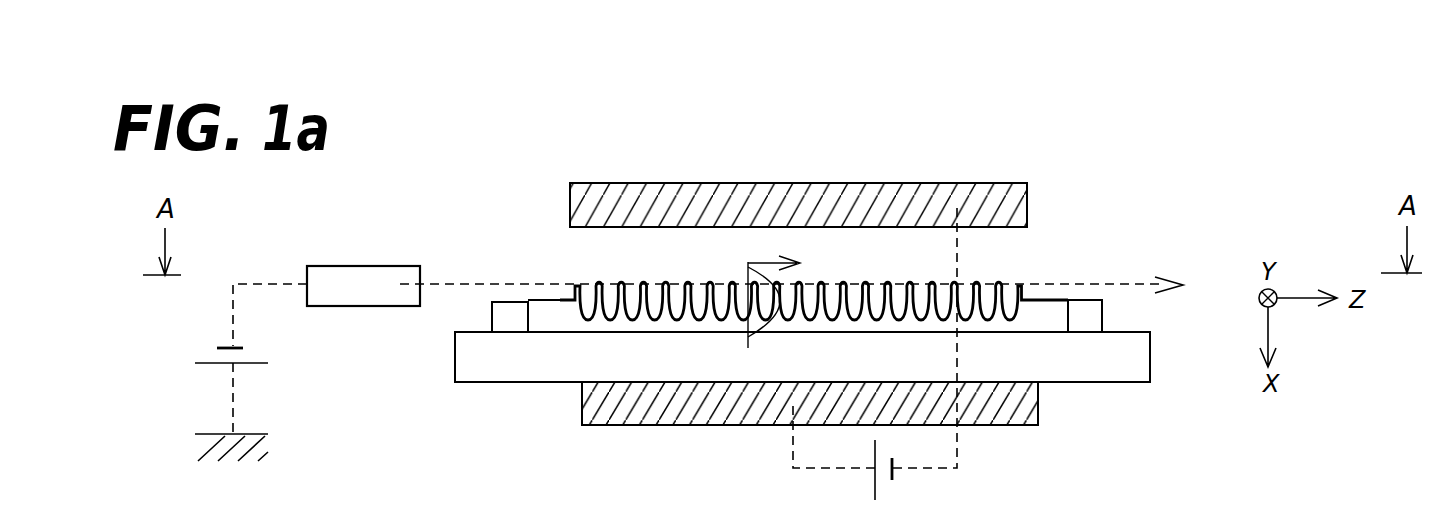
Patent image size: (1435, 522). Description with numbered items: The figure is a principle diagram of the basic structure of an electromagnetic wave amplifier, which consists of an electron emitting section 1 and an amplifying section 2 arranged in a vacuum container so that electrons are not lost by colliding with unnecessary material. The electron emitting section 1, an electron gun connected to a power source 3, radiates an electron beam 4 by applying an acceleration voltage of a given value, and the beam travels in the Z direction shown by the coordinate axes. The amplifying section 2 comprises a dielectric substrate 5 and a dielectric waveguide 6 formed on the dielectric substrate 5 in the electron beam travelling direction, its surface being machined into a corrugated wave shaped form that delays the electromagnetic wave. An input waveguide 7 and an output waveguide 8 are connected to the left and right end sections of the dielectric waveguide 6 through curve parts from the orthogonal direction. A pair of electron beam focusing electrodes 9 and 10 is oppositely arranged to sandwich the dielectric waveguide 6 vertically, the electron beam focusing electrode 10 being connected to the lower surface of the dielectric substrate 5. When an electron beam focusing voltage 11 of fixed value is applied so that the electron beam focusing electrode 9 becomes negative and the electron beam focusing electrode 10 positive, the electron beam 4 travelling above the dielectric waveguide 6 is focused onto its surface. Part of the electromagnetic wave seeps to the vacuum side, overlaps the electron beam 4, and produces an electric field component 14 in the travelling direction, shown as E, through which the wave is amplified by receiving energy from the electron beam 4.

The electron emitting section 1 is at (382, 265).
The amplifying section 2 is at (770, 369).
The power source 3 is at (214, 352).
The electron beam 4 is at (493, 283).
The dielectric substrate 5 is at (455, 357).
The dielectric waveguide 6 is at (880, 292).
The input waveguide 7 is at (510, 317).
The output waveguide 8 is at (1086, 316).
The electron beam focusing electrode 9 is at (872, 184).
The electron beam focusing electrode 10 is at (1027, 412).
The electron beam focusing voltage 11 is at (885, 481).
The electric field component 14 is at (748, 277).